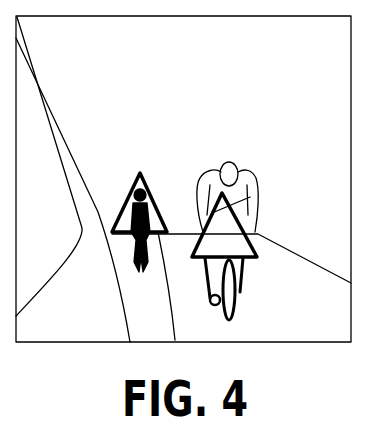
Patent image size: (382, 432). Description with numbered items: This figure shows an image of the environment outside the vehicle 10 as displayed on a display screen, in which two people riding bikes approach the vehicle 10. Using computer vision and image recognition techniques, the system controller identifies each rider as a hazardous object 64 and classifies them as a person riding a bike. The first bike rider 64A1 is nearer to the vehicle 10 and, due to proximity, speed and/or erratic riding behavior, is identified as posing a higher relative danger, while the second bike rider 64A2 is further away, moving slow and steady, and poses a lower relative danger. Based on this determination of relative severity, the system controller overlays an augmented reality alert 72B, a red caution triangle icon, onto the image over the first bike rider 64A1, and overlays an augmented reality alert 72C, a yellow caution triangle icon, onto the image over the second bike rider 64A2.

The vehicle 10 is at (91, 314).
The hazardous object 64 is at (231, 231).
The second bike rider 64A2 is at (143, 188).
The first bike rider 64A1 is at (271, 249).
The augmented reality alert 72C is at (175, 340).
The augmented reality alert 72B is at (249, 243).